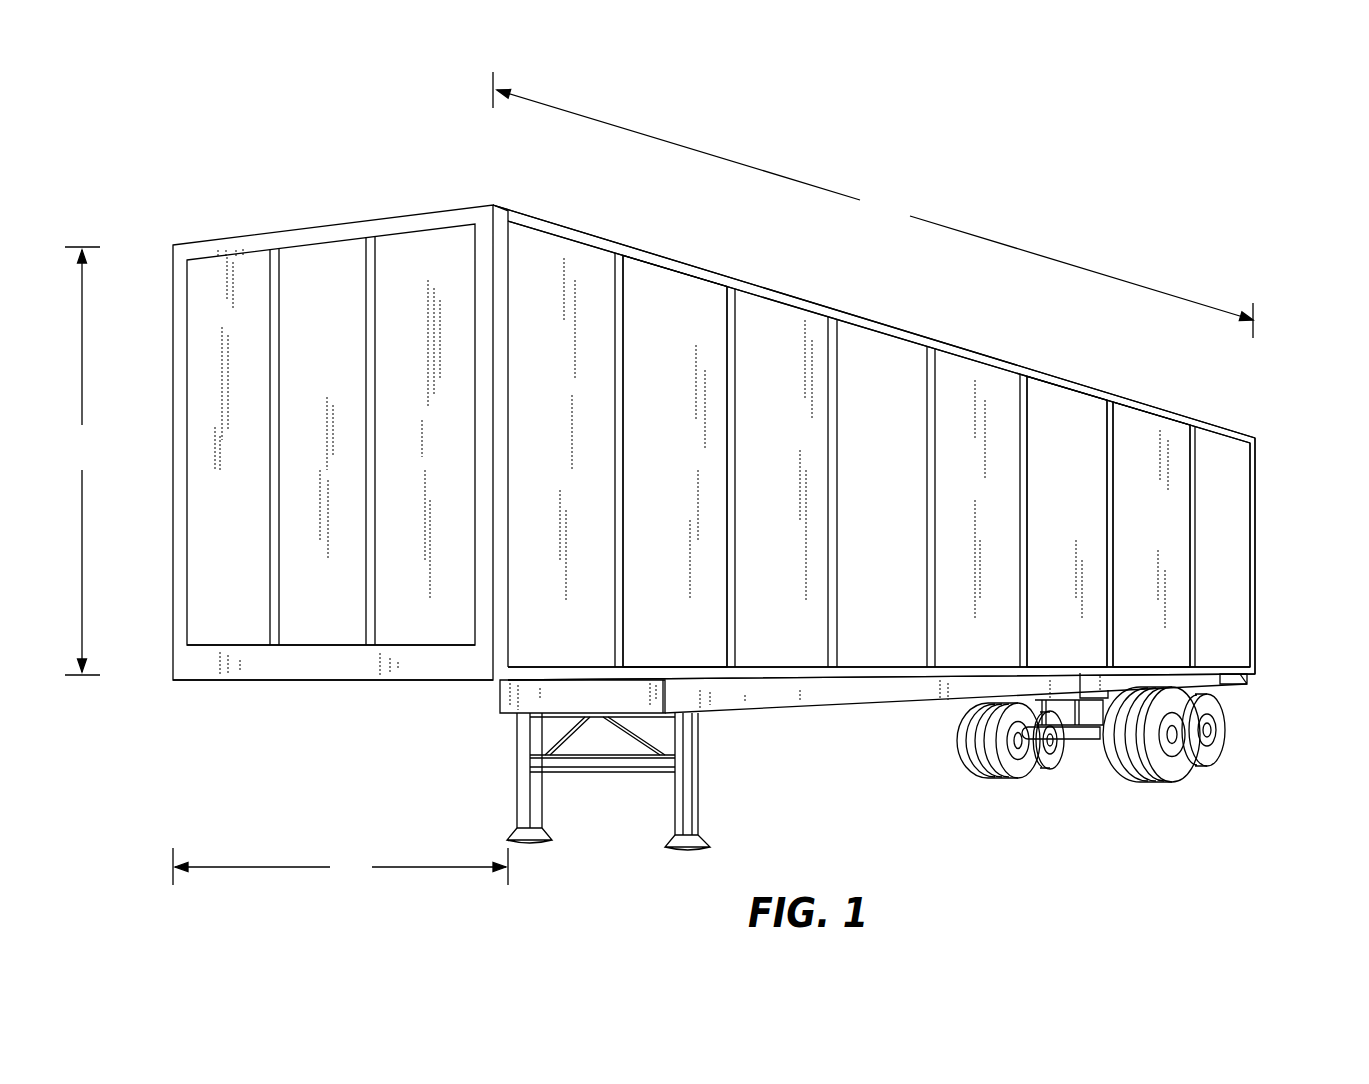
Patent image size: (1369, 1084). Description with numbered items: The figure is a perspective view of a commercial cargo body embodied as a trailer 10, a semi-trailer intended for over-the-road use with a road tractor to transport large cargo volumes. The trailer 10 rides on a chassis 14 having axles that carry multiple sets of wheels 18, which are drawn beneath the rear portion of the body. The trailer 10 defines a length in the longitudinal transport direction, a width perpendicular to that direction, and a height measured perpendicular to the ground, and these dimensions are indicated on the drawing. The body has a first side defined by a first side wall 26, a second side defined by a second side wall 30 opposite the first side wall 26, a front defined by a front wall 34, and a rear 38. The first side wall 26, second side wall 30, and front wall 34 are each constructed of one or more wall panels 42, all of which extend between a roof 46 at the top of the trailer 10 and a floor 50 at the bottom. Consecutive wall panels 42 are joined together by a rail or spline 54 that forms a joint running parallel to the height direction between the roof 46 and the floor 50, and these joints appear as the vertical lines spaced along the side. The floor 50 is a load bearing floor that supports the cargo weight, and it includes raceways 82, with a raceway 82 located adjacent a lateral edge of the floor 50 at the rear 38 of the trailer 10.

The trailer 10 is at (212, 170).
The chassis 14 is at (777, 728).
The wheels 18 is at (977, 780).
The first side wall 26 is at (1178, 604).
The second side wall 30 is at (160, 394).
The front wall 34 is at (195, 612).
The rear 38 is at (1283, 474).
The wall panels 42 is at (642, 402).
The roof 46 is at (1067, 378).
The floor 50 is at (873, 672).
The rail or spline 54 is at (733, 297).
The raceways 82 is at (1248, 686).